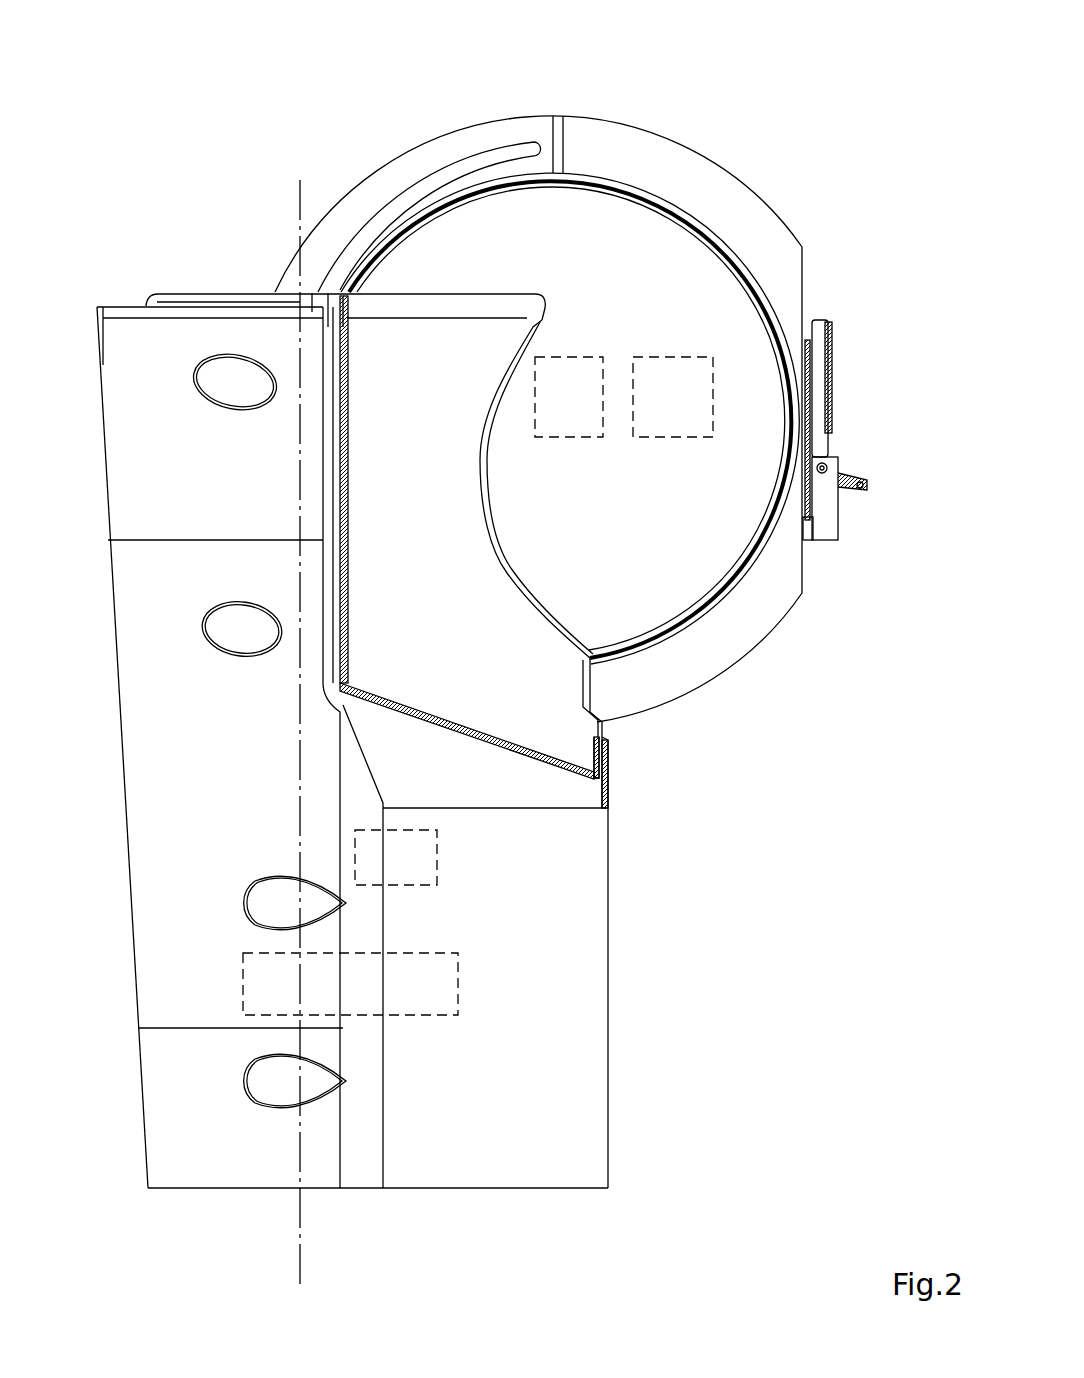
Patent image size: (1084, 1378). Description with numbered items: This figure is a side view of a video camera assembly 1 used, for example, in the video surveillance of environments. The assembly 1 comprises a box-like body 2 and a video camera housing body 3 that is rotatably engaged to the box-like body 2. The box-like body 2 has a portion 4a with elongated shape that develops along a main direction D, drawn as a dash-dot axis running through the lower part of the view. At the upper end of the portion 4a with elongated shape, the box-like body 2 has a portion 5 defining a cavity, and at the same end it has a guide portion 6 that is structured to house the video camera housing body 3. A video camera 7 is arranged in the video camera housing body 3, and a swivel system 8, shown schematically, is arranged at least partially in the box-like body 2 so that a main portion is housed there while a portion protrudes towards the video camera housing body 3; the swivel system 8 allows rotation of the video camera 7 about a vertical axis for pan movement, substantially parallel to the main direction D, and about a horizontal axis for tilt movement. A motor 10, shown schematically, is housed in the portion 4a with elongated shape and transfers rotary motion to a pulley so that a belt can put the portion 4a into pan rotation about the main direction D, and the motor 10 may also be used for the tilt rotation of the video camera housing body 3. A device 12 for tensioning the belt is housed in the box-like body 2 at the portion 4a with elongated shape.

The video camera assembly 1 is at (852, 123).
The box-like body 2 is at (573, 1095).
The video camera housing body 3 is at (680, 170).
The portion with elongated shape 4a is at (155, 777).
The portion defining a cavity 5 is at (735, 532).
The guide portion 6 is at (553, 702).
The video camera 7 is at (716, 398).
The swivel system 8 is at (572, 355).
The motor 10 is at (437, 865).
The device for tensioning the belt 12 is at (417, 1020).
The main direction D is at (298, 222).